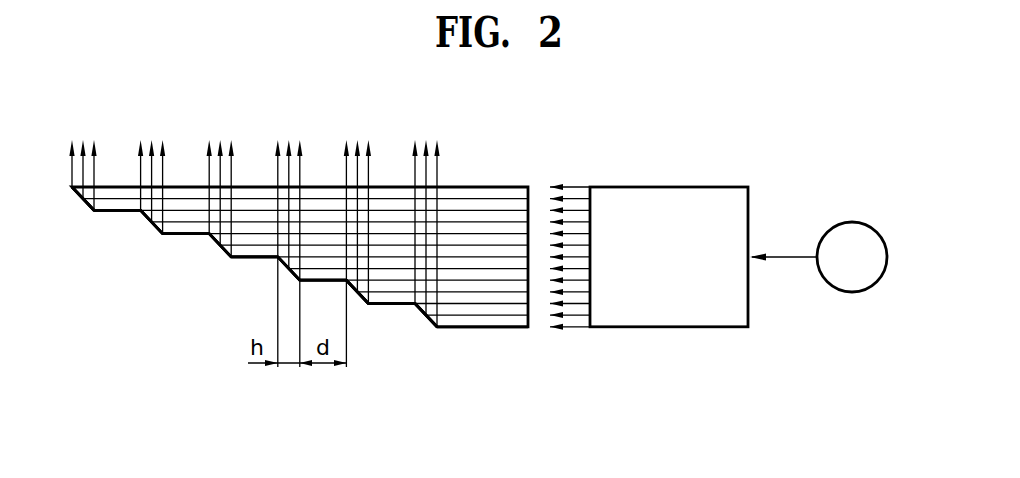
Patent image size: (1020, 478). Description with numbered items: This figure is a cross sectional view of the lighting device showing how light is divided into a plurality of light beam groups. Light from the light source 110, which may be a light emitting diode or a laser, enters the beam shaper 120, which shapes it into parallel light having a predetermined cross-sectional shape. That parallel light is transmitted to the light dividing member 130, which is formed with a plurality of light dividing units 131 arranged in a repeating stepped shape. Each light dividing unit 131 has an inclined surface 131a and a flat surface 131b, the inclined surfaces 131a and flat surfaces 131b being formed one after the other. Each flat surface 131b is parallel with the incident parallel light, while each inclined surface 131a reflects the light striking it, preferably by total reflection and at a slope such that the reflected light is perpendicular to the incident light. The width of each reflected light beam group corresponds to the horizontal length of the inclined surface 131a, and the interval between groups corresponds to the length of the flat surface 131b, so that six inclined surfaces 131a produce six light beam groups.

The light source 110 is at (850, 228).
The beam shaper 120 is at (672, 192).
The light dividing member 130 is at (496, 187).
The light dividing unit 131 is at (226, 317).
The inclined surface 131a is at (153, 233).
The flat surface 131b is at (189, 232).